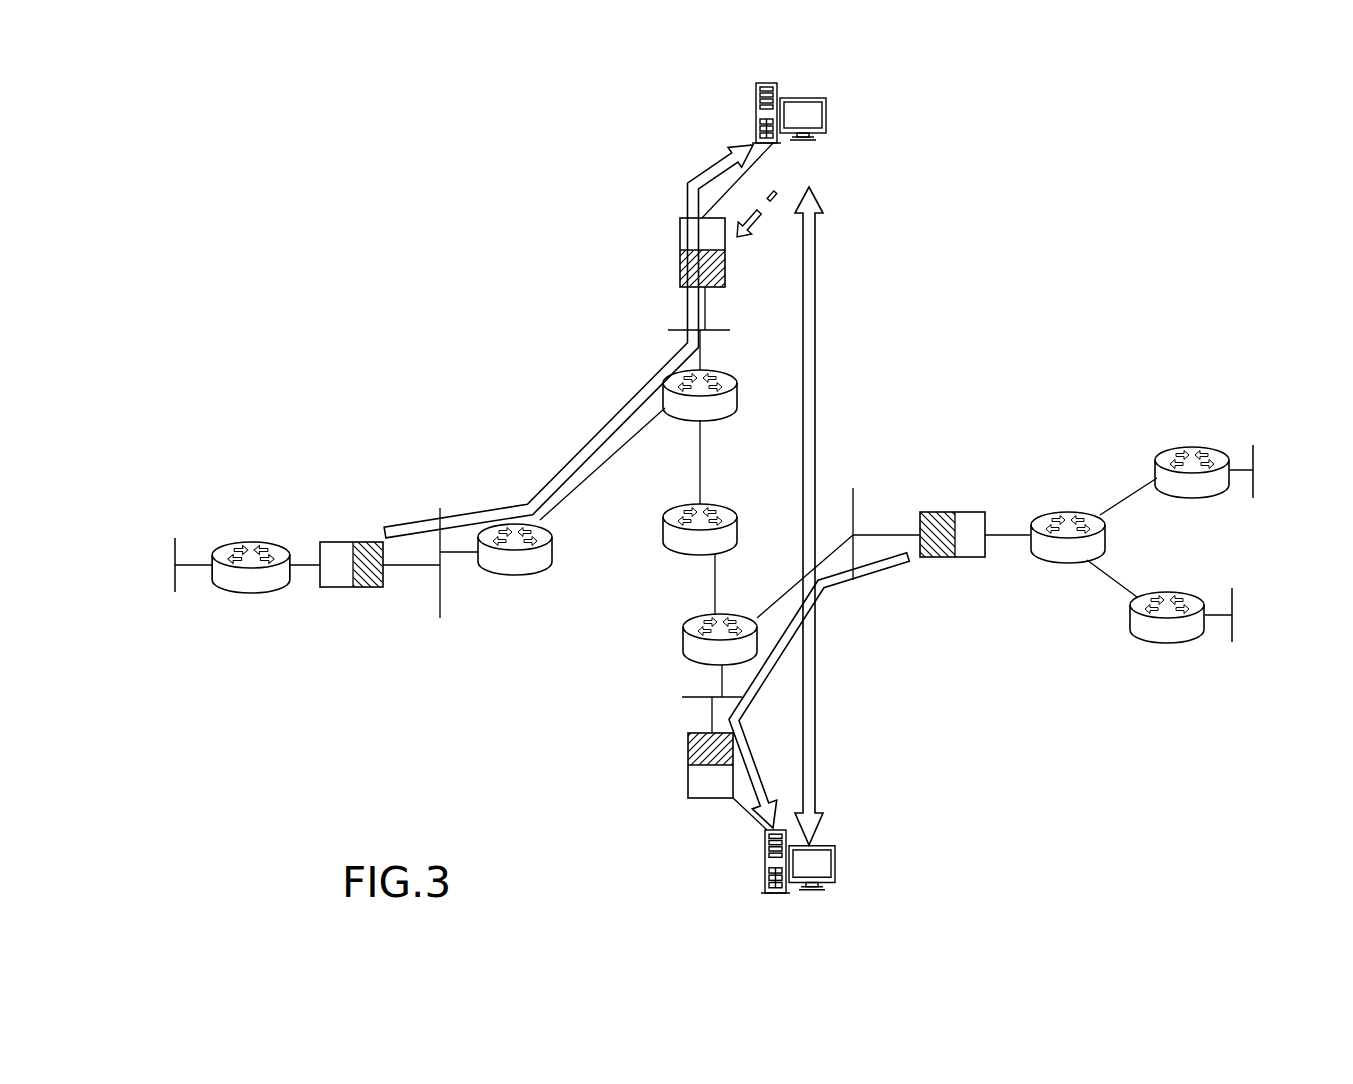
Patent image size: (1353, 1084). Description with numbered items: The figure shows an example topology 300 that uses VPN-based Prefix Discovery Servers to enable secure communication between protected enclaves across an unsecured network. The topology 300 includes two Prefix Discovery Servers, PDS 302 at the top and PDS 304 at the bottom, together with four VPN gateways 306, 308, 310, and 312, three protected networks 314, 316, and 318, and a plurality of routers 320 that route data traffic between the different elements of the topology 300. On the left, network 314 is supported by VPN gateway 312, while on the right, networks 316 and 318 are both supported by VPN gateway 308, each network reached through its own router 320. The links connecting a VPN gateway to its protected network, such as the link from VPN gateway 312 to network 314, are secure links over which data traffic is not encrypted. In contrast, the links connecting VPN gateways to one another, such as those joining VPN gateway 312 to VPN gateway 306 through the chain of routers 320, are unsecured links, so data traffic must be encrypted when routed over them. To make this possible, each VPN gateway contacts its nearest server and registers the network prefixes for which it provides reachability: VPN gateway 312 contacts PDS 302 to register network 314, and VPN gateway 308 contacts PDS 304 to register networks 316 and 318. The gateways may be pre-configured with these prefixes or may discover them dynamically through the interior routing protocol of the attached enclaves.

The example topology 300 is at (960, 160).
The PDS 302 is at (826, 119).
The PDS 304 is at (833, 857).
The VPN gateway 306 is at (725, 268).
The VPN gateway 308 is at (957, 512).
The VPN gateway 310 is at (688, 788).
The VPN gateway 312 is at (347, 587).
The network 314 is at (175, 540).
The network 316 is at (1255, 445).
The network 318 is at (1233, 590).
The router 320 is at (725, 418).